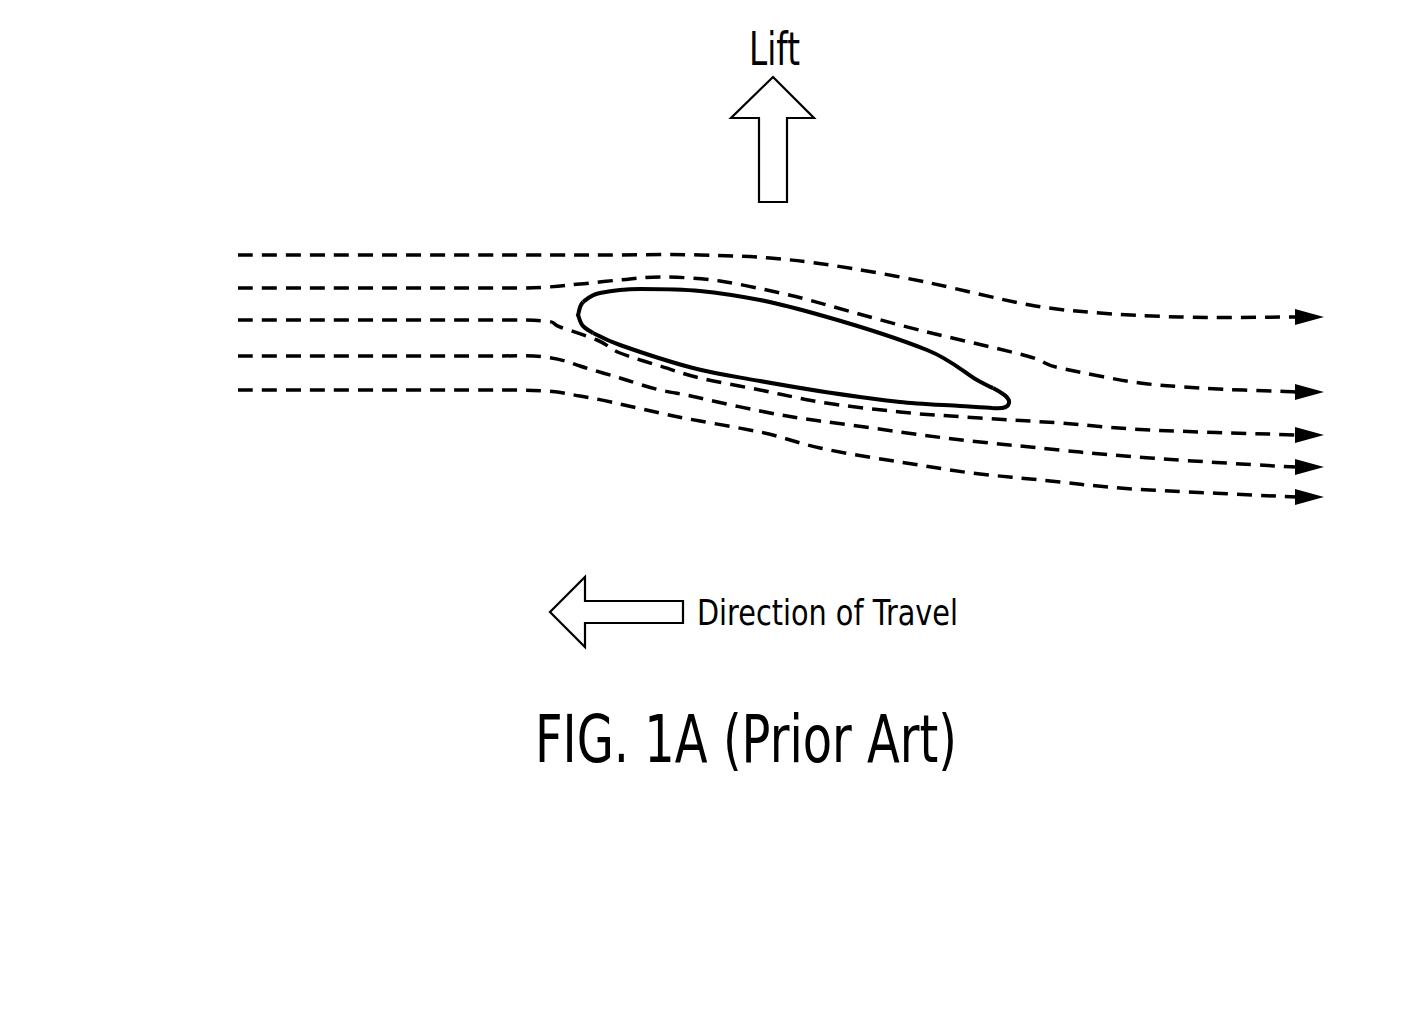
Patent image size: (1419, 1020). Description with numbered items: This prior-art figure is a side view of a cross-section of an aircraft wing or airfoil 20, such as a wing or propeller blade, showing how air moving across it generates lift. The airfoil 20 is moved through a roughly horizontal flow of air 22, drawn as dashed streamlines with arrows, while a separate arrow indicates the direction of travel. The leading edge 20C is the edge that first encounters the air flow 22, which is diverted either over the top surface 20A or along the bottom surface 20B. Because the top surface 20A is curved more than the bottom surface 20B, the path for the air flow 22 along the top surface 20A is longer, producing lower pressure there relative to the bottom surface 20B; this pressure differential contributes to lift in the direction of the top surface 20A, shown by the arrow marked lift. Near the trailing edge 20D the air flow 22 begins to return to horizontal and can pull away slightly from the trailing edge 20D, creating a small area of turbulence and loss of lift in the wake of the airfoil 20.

The airfoil 20 is at (792, 332).
The top surface 20A is at (843, 316).
The bottom surface 20B is at (760, 384).
The leading edge 20C is at (573, 311).
The trailing edge 20D is at (1013, 405).
The air flow 22 is at (399, 328).